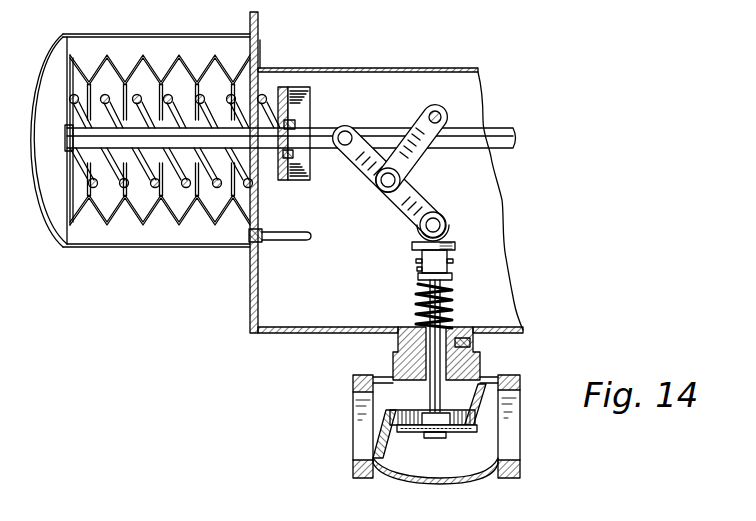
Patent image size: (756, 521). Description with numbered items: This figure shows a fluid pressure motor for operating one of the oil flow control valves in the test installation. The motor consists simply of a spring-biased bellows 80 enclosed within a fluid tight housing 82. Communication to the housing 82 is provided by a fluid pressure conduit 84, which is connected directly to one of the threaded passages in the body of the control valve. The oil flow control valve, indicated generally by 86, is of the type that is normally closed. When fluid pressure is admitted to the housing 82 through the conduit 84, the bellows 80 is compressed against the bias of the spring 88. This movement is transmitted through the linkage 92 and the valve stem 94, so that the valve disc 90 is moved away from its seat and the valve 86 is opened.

The bellows 80 is at (133, 215).
The fluid tight housing 82 is at (186, 248).
The fluid pressure conduit 84 is at (293, 242).
The oil flow control valve 86 is at (483, 407).
The spring 88 is at (266, 108).
The valve disc 90 is at (458, 433).
The linkage 92 is at (398, 197).
The valve stem 94 is at (443, 300).